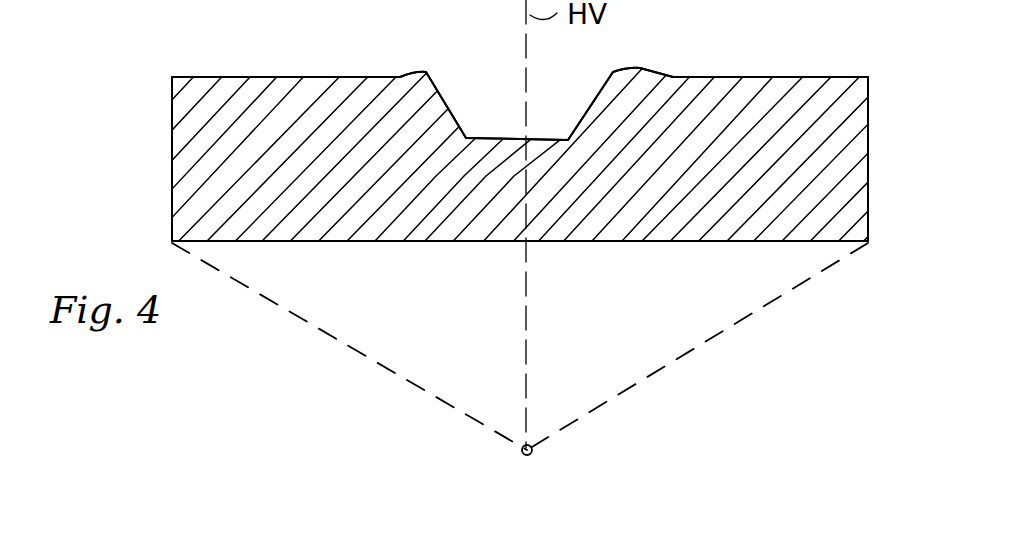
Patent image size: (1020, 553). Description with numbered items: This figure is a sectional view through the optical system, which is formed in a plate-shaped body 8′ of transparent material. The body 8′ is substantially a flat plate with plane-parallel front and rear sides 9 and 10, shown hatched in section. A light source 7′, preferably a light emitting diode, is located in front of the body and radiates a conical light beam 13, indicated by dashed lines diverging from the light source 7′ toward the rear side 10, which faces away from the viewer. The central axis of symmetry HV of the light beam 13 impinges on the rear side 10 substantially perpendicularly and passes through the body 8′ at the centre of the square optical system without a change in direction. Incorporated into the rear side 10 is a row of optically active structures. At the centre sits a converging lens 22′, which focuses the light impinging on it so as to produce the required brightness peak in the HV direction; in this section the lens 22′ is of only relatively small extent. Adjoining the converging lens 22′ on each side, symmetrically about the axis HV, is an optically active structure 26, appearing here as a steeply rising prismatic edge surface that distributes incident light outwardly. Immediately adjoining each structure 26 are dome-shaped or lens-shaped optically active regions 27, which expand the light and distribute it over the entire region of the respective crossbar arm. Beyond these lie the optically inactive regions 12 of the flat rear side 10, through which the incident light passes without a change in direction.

The rear side 10 is at (821, 77).
The plate-shaped body 8′ is at (870, 159).
The optically inactive regions 12 is at (244, 77).
The dome-shaped or lens-shaped optically active regions 27 is at (403, 72).
The optically active structure 26 is at (448, 100).
The converging lens 22′ is at (503, 138).
The front side 9 is at (678, 245).
The conical light beam 13 is at (713, 333).
The light source 7′ is at (531, 456).